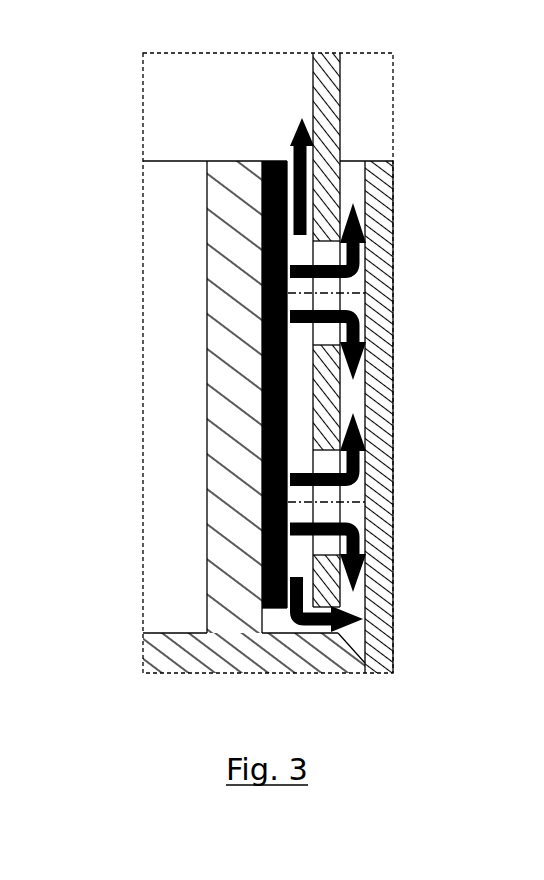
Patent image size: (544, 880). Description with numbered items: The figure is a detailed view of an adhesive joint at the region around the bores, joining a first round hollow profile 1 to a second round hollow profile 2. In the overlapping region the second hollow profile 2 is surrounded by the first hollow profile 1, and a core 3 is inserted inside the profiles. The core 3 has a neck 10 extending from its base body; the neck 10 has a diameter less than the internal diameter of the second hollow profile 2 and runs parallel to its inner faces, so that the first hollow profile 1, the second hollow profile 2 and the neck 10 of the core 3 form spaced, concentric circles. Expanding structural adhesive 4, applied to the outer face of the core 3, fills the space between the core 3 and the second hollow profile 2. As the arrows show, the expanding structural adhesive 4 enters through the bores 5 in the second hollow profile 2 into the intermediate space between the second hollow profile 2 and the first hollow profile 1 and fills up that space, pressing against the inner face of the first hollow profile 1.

The first round hollow profile 1 is at (377, 452).
The second round hollow profile 2 is at (333, 118).
The core 3 is at (222, 343).
The structural adhesive 4 is at (273, 161).
The bores 5 is at (343, 285).
The neck 10 is at (233, 450).